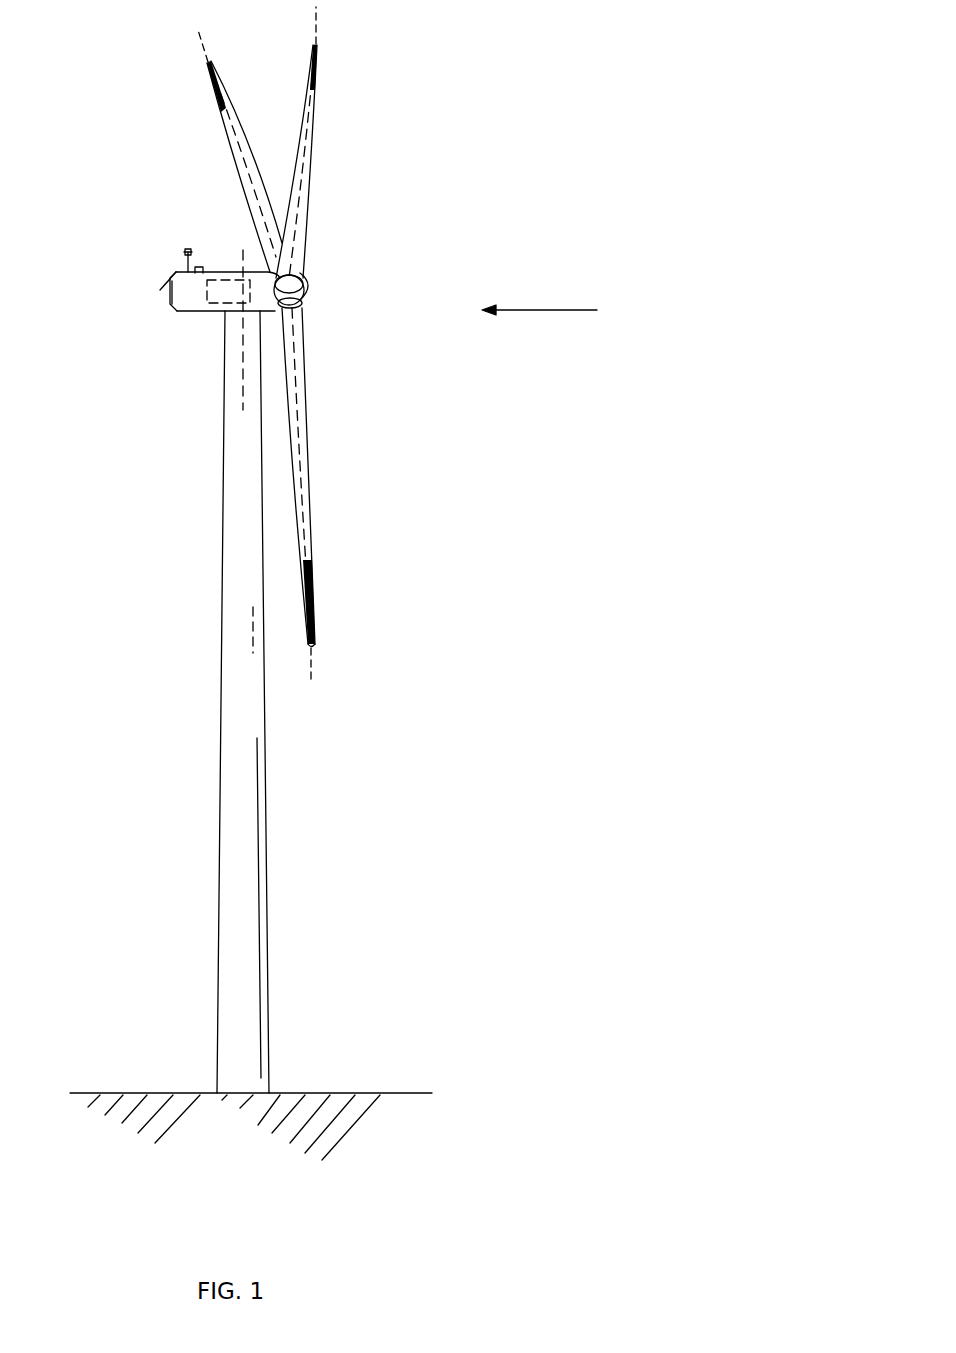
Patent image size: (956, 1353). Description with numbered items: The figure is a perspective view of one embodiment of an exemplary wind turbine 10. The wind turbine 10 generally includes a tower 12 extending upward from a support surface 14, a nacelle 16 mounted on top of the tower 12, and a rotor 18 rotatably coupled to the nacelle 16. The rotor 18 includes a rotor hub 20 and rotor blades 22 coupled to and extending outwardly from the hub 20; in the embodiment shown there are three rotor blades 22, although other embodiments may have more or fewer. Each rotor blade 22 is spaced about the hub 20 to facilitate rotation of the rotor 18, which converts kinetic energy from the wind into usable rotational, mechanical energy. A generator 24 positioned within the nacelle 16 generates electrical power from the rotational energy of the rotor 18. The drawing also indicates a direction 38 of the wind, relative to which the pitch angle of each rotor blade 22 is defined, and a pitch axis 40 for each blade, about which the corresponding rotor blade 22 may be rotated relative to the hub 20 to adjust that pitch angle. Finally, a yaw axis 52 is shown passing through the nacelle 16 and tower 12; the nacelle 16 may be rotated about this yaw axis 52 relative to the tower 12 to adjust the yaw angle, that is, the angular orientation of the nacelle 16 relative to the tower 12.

The wind turbine 10 is at (592, 110).
The tower 12 is at (232, 813).
The support surface 14 is at (152, 1093).
The nacelle 16 is at (205, 315).
The rotor 18 is at (318, 269).
The rotor hub 20 is at (308, 291).
The rotor blade 22 is at (246, 146).
The generator 24 is at (227, 280).
The direction of the wind 38 is at (540, 310).
The pitch axis 40 is at (202, 48).
The yaw axis 52 is at (242, 388).